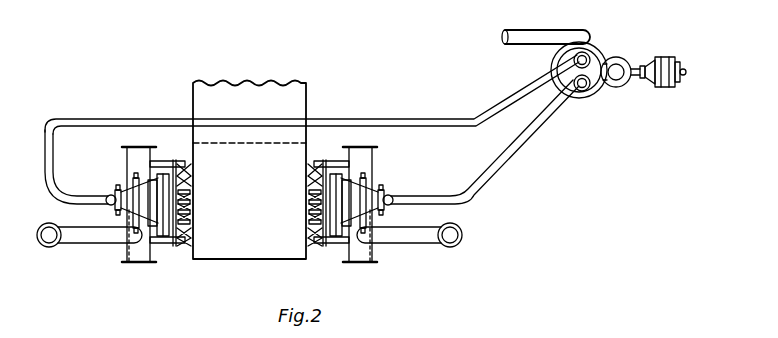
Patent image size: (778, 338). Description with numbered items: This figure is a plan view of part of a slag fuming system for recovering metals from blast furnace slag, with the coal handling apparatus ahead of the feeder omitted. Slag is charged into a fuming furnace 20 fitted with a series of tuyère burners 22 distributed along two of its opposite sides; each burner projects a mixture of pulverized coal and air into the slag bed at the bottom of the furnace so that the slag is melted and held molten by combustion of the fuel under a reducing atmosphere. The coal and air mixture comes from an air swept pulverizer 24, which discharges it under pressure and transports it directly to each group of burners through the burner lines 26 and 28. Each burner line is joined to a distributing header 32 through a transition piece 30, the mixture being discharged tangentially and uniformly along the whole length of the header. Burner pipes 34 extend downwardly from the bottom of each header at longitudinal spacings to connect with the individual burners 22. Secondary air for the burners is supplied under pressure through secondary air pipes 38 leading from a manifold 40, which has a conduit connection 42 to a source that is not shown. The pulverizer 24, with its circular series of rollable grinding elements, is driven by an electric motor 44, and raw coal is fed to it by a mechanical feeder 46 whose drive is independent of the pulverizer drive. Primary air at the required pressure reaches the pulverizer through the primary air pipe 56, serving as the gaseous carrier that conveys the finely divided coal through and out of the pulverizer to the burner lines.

The fuming furnace 20 is at (258, 199).
The tuyère burners 22 is at (185, 160).
The air swept pulverizer 24 is at (585, 97).
The burner line 26 is at (498, 170).
The burner line 28 is at (424, 118).
The transition piece 30 is at (108, 194).
The distributing header 32 is at (170, 190).
The burner pipes 34 is at (179, 250).
The secondary air pipes 38 is at (165, 160).
The manifold 40 is at (127, 252).
The conduit connection 42 is at (66, 246).
The electric motor 44 is at (663, 89).
The mechanical feeder 46 is at (622, 61).
The primary air pipe 56 is at (546, 30).